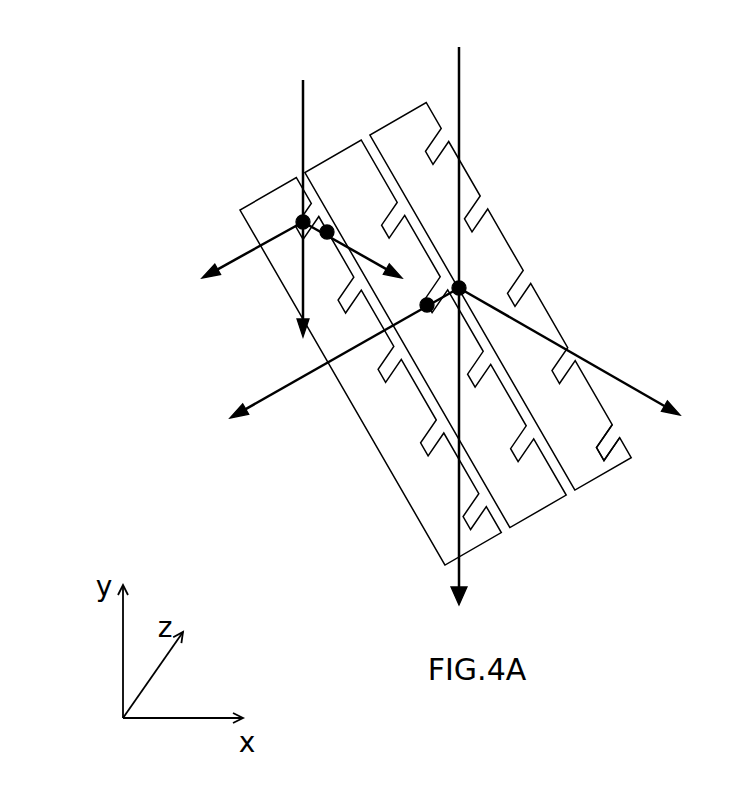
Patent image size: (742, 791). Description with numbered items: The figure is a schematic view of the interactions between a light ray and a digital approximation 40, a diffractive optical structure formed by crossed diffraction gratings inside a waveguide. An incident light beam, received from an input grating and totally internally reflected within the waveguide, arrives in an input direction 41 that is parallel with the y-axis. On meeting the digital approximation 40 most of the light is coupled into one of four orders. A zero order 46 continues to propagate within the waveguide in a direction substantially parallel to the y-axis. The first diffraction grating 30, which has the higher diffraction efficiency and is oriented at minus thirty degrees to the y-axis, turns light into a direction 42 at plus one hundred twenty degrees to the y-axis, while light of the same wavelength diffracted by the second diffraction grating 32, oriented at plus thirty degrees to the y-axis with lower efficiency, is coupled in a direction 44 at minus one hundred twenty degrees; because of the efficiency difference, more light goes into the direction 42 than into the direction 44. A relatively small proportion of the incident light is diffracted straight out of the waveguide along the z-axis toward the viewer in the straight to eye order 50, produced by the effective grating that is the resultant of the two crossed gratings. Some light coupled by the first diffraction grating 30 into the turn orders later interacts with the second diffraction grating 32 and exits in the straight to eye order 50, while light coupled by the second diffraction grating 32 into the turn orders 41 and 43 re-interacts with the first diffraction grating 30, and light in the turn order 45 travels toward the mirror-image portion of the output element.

The first diffraction grating 30 is at (568, 488).
The second diffraction grating 32 is at (602, 443).
The digital approximation 40 is at (492, 257).
The input direction 41 is at (462, 152).
The first turn order direction 42 is at (608, 372).
The turn order 43 is at (252, 254).
The turn order direction 44 is at (300, 380).
The turn order 45 is at (363, 253).
The zero order 46 is at (462, 575).
The straight to eye order 50 is at (300, 222).